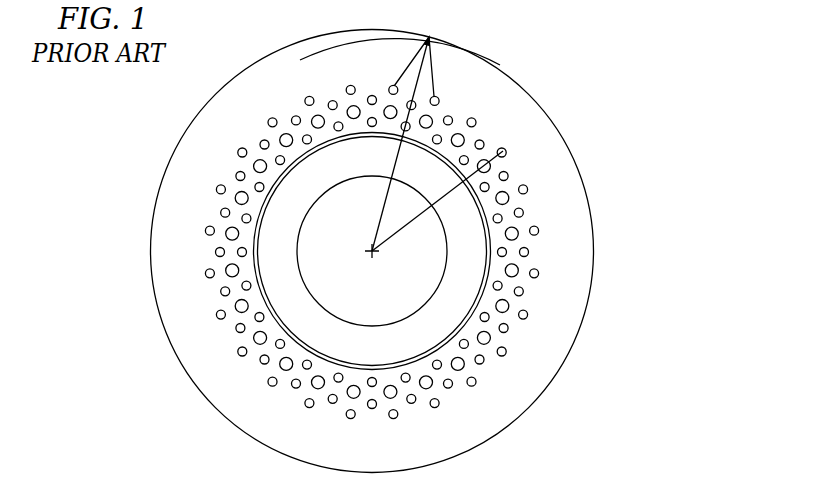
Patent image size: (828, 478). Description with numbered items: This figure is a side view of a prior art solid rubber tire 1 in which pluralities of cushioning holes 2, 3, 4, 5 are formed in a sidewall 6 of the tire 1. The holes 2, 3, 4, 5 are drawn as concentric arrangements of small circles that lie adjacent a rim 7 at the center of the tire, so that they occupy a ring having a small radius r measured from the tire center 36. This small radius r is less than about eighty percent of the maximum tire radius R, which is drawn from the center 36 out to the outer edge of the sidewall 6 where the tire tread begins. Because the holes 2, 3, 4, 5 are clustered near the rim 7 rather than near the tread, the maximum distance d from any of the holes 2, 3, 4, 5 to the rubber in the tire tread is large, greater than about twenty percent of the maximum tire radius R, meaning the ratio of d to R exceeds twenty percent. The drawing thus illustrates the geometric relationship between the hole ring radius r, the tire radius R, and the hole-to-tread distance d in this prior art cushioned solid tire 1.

The solid rubber tire 1 is at (183, 135).
The cushioning holes 2 is at (439, 96).
The cushioning holes 3 is at (451, 116).
The cushioning holes 4 is at (463, 136).
The cushioning holes 5 is at (452, 166).
The sidewall 6 is at (445, 48).
The rim 7 is at (434, 160).
The center of disc 36 is at (366, 251).
The maximum tire radius R is at (386, 198).
The small radius r is at (403, 230).
The maximum distance d is at (399, 62).